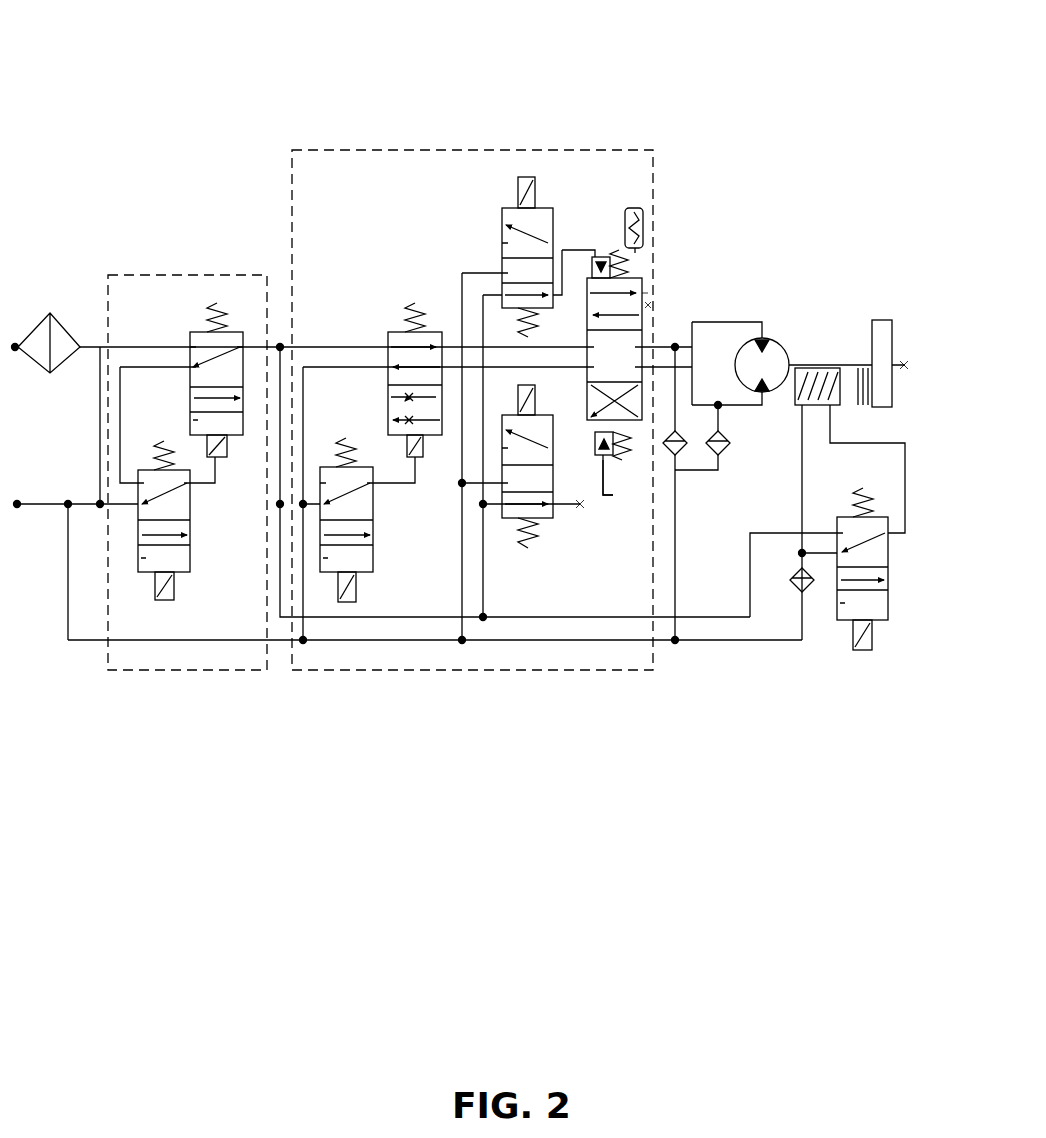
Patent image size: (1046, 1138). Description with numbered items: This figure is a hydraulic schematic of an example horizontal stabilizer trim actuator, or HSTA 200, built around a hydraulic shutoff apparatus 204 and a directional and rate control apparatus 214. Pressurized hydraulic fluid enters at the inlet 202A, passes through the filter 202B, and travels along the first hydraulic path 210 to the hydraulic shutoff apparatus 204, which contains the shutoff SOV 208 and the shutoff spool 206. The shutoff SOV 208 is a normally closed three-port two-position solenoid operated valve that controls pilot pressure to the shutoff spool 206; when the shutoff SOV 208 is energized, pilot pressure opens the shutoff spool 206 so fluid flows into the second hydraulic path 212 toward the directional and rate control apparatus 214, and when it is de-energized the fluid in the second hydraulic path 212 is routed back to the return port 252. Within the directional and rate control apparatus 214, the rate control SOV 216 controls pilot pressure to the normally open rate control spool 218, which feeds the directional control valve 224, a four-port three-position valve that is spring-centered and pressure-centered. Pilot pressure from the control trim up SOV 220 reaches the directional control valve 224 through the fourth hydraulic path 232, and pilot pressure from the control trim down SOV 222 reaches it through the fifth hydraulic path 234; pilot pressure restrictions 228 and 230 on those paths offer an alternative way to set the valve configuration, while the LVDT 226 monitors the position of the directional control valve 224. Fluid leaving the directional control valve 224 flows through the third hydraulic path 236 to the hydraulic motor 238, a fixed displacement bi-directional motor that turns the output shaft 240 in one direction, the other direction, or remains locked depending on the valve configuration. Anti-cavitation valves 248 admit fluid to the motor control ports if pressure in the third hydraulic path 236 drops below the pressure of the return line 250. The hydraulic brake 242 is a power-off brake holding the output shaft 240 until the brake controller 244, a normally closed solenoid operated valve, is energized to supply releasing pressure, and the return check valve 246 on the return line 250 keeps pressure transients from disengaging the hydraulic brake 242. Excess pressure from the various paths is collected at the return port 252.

The horizontal stabilizer trim actuator 200 is at (120, 58).
The inlet 202A is at (16, 336).
The filter 202B is at (52, 312).
The hydraulic shutoff apparatus 204 is at (153, 675).
The shutoff spool 206 is at (233, 326).
The shutoff SOV 208 is at (165, 605).
The first hydraulic path 210 is at (85, 358).
The second hydraulic path 212 is at (280, 338).
The directional and rate control apparatus 214 is at (315, 150).
The rate control SOV 216 is at (345, 605).
The rate control spool 218 is at (406, 300).
The control trim up SOV 220 is at (520, 175).
The control trim down SOV 222 is at (537, 552).
The directional control valve 224 is at (646, 290).
The Linear Variable Differential Transformer 226 is at (656, 221).
The pilot pressure restriction 228 is at (587, 237).
The pilot pressure restriction 230 is at (588, 508).
The fourth hydraulic path 232 is at (568, 242).
The fifth hydraulic path 234 is at (614, 496).
The third hydraulic path 236 is at (677, 337).
The hydraulic motor 238 is at (766, 340).
The output shaft 240 is at (876, 318).
The hydraulic brake 242 is at (833, 409).
The brake controller 244 is at (860, 655).
The return check valve 246 is at (796, 596).
The anti-cavitation valves 248 is at (697, 454).
The return line 250 is at (514, 646).
The return port 252 is at (19, 512).